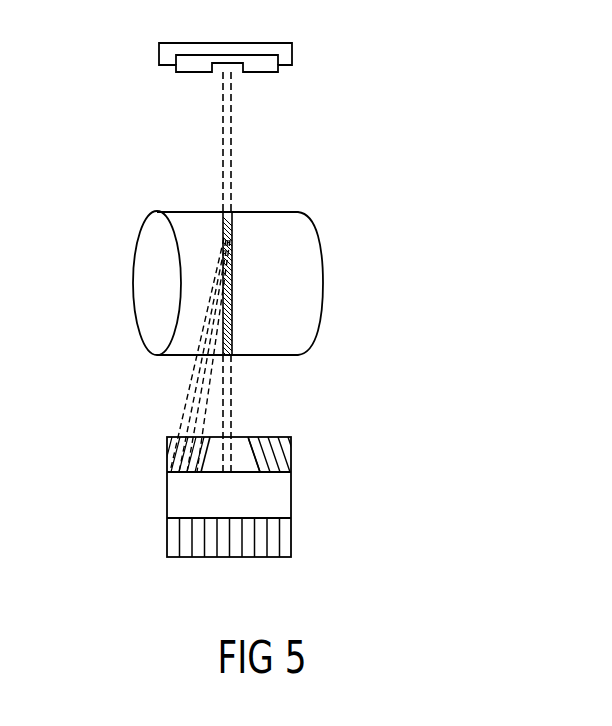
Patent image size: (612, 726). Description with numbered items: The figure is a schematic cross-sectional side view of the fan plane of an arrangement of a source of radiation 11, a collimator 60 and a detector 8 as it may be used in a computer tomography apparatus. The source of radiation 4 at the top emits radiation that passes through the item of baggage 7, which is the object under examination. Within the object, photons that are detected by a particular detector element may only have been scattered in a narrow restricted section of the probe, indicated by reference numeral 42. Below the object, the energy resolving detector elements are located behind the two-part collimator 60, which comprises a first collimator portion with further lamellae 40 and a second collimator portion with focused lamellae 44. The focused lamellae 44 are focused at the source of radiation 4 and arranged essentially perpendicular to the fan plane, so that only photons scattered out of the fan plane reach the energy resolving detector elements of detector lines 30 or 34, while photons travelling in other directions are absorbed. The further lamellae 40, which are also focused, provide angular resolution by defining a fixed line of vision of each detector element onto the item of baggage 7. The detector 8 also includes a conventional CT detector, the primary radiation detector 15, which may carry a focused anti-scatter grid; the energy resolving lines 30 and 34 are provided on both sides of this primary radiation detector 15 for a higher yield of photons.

The source of radiation 4 is at (168, 52).
The source of radiation 11 is at (223, 131).
The item of baggage 7 is at (152, 233).
The narrow restricted section of the probe 42 is at (232, 283).
The detector 8 is at (345, 521).
The collimator 60 is at (225, 477).
The further lamellae 40 is at (167, 452).
The focused lamellae 44 is at (173, 492).
The detector line of energy resolving detector elements 30 is at (180, 560).
The primary radiation detector 15 is at (224, 560).
The detector line of energy resolving detector elements 34 is at (290, 560).